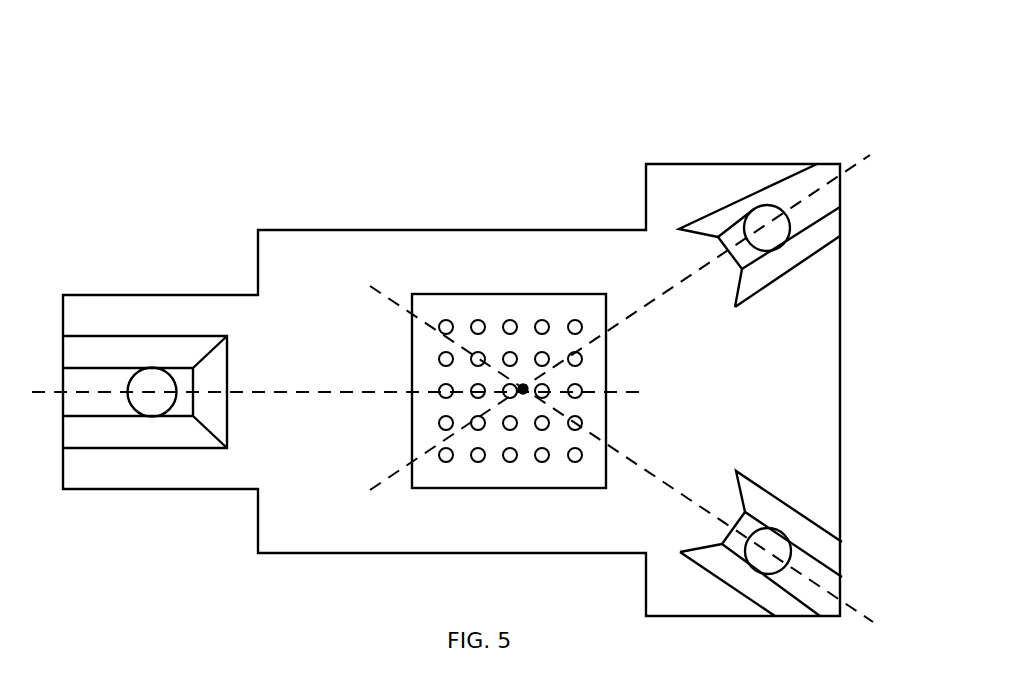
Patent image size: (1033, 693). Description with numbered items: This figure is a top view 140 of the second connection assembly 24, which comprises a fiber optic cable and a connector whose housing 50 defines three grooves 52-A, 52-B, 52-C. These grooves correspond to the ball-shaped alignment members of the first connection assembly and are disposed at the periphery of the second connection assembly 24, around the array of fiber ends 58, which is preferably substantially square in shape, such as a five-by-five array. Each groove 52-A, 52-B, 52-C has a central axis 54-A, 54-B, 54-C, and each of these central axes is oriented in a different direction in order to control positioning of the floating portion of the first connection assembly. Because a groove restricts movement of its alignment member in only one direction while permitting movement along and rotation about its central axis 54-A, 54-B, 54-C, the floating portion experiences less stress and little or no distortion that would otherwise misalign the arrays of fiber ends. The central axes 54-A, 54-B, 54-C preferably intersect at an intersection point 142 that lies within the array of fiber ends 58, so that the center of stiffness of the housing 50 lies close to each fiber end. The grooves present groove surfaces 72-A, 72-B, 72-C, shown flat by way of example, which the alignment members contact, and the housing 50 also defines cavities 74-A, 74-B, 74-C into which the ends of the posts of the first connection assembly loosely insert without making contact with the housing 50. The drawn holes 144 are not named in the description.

The second connection assembly 24 is at (239, 147).
The top view 140 is at (636, 71).
The housing 50 is at (418, 231).
The groove 52-A is at (148, 358).
The groove 52-B is at (775, 268).
The groove 52-C is at (763, 510).
The central axis 54-A is at (287, 393).
The central axis 54-B is at (662, 293).
The central axis 54-C is at (640, 467).
The array of fiber ends 58 is at (607, 358).
The groove surface 72-A is at (178, 438).
The groove surface 72-B is at (712, 220).
The groove surface 72-C is at (712, 562).
The cavity 74-A is at (147, 403).
The cavity 74-B is at (768, 218).
The cavity 74-C is at (775, 547).
The intersection point 142 is at (523, 394).
The apertures 144 is at (472, 462).